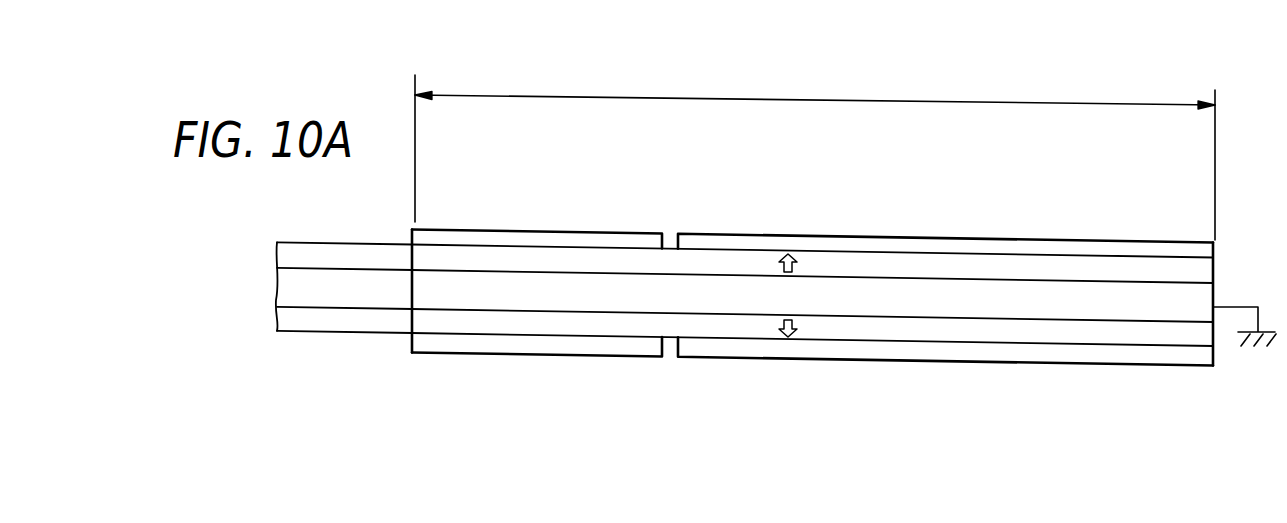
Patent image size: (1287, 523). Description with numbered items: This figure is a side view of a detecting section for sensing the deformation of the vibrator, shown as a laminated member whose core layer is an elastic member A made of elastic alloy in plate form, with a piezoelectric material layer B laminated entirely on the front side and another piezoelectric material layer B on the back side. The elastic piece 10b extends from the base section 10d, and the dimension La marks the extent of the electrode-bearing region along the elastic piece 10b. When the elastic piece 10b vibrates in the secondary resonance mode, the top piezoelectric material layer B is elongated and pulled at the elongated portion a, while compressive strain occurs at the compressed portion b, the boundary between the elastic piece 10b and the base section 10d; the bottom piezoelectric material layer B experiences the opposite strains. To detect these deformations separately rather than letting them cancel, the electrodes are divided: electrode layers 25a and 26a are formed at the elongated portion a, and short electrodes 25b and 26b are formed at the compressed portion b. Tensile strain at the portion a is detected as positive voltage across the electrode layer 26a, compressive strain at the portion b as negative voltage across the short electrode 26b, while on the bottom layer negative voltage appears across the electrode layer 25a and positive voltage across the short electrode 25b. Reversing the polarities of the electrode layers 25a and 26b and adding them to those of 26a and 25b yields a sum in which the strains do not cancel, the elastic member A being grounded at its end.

The elastic piece 10b is at (713, 360).
The base section 10d is at (336, 334).
The electrode layer 25a is at (1047, 354).
The short electrode 25b is at (602, 346).
The electrode layer 26a is at (804, 237).
The short electrode 26b is at (623, 232).
The elastic member A is at (1198, 298).
The piezoelectric material layer B is at (1128, 267).
The elongated portion a is at (1019, 228).
The compressed portion b is at (462, 220).
The length La of active portion La is at (815, 154).